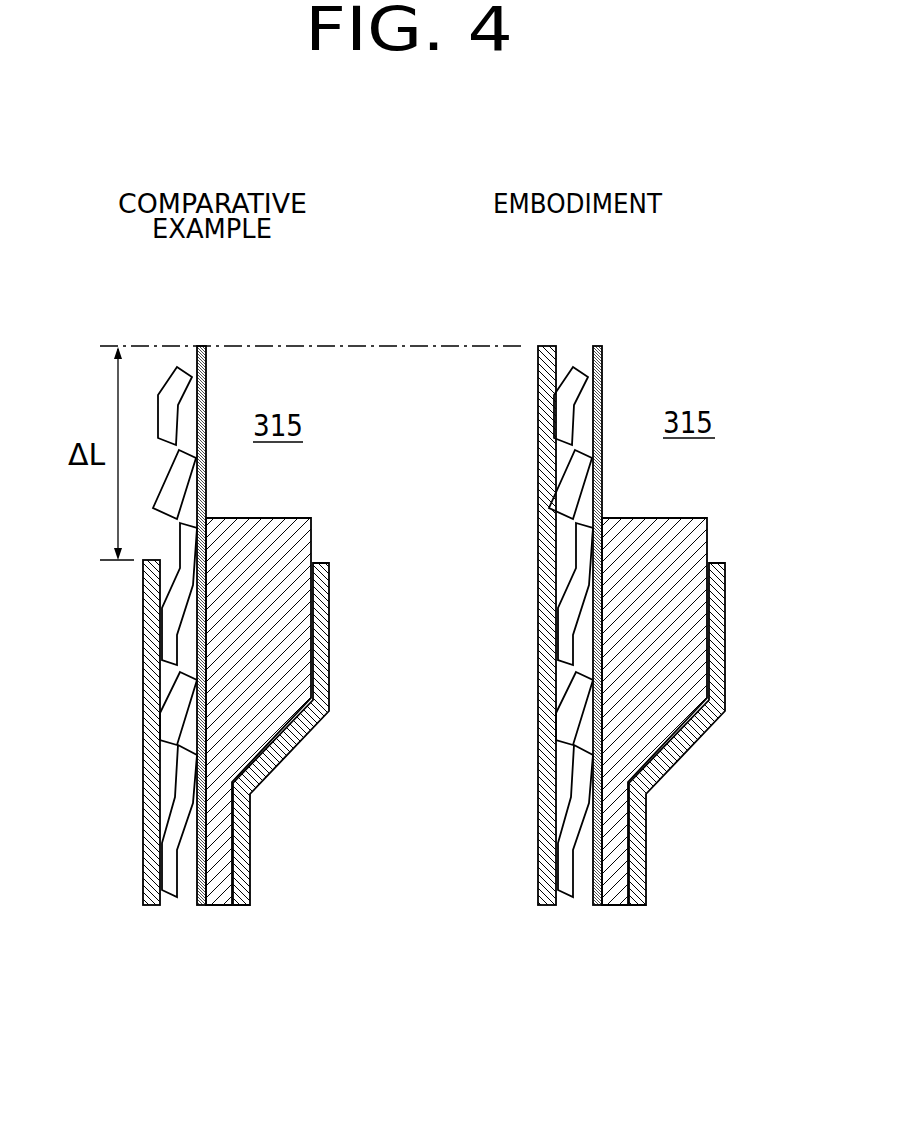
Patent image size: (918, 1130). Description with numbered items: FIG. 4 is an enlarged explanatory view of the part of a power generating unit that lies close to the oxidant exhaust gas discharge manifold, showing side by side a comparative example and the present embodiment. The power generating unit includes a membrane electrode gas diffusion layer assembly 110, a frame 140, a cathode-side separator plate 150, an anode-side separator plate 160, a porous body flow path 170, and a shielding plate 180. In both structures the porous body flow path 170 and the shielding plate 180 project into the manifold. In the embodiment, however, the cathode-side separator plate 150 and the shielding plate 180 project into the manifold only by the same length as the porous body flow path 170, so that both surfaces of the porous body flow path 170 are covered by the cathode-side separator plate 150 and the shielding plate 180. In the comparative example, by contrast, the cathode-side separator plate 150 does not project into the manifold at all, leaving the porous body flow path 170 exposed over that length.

The membrane electrode gas diffusion layer assembly 110 is at (310, 303).
The frame 140 is at (288, 518).
The cathode-side separator plate 150 is at (143, 708).
The anode-side separator plate 160 is at (321, 563).
The porous body flow path 170 is at (178, 366).
The shielding plate 180 is at (598, 346).